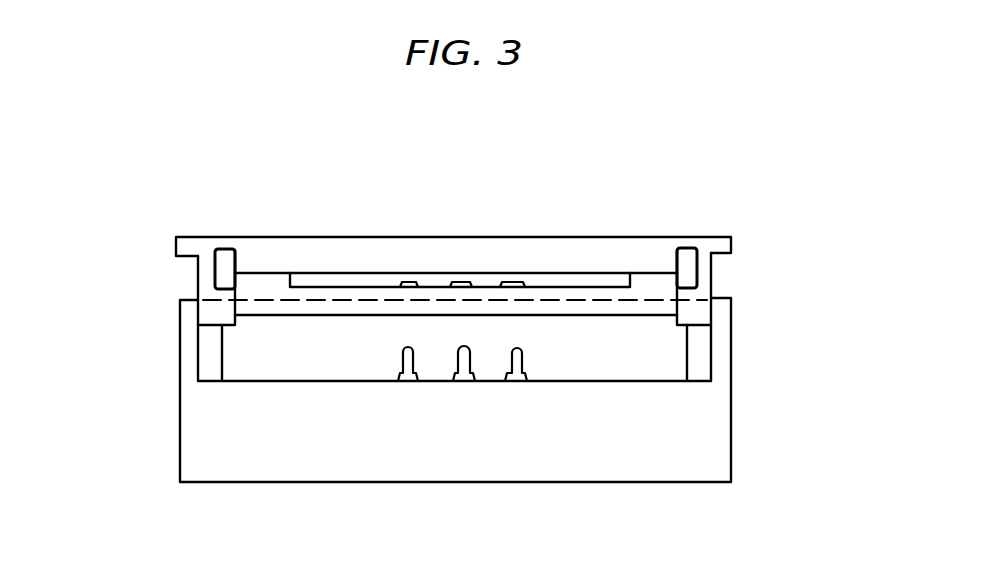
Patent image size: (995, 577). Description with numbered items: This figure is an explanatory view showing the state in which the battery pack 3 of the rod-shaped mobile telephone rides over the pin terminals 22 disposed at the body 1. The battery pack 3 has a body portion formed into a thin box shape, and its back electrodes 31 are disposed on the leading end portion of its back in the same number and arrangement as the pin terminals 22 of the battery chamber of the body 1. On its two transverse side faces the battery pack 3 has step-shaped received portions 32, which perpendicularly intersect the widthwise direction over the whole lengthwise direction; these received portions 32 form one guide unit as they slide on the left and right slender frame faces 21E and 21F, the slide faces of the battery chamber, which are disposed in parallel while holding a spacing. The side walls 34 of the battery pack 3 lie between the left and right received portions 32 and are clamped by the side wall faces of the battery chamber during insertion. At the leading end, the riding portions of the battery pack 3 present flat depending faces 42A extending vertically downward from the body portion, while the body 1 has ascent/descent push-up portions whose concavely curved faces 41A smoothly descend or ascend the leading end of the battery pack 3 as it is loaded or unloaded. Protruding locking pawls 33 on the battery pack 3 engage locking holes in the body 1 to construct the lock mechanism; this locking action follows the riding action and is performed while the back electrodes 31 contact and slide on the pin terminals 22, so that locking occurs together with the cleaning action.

The body 1 is at (600, 482).
The battery pack 3 is at (565, 237).
The frame face 21E is at (728, 294).
The frame face 21F is at (184, 298).
The pin terminals 22 is at (413, 355).
The back electrodes 31 is at (507, 283).
The received portions 32 is at (162, 276).
The locking pawls 33 is at (233, 250).
The side walls 34 is at (348, 253).
The concavely curved face 41A is at (207, 348).
The depending faces 42A is at (187, 261).